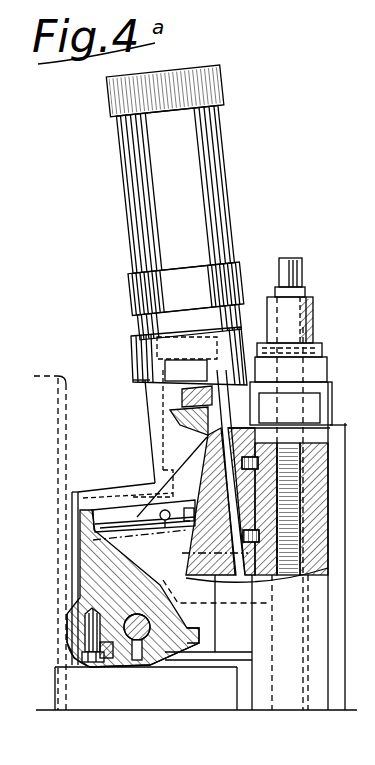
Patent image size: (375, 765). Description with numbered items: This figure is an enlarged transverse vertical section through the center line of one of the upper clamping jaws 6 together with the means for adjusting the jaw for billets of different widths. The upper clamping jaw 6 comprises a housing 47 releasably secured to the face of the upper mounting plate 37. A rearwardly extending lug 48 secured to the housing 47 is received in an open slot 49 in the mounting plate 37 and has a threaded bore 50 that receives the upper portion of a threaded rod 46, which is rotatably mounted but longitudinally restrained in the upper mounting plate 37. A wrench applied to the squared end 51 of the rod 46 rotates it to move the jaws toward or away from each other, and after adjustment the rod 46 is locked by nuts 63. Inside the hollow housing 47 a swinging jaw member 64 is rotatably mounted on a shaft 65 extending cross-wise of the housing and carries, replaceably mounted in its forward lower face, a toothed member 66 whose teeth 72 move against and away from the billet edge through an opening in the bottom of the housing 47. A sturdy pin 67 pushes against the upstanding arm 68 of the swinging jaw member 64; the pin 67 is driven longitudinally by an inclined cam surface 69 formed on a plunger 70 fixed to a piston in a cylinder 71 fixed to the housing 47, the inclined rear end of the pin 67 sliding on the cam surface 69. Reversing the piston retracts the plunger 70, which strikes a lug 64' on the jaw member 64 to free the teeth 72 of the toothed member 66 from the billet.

The cylinder 71 is at (200, 180).
The plunger 70 is at (187, 415).
The inclined cam surface 69 is at (190, 472).
The housing 47 is at (148, 483).
The push pin 67 is at (115, 517).
The upstanding arm 68 is at (80, 538).
The upper clamping jaw 6 is at (80, 565).
The swinging jaw member 64 is at (133, 625).
The lug 64' is at (214, 623).
The toothed member 66 is at (85, 632).
The teeth 72 is at (93, 662).
The shaft 65 is at (147, 640).
The squared end 51 is at (289, 258).
The nuts 63 is at (302, 312).
The open slot 49 is at (308, 457).
The rearwardly extending lug 48 is at (308, 480).
The threaded bore 50 is at (300, 510).
The threaded rod 46 is at (308, 556).
The upper mounting plate 37 is at (335, 665).